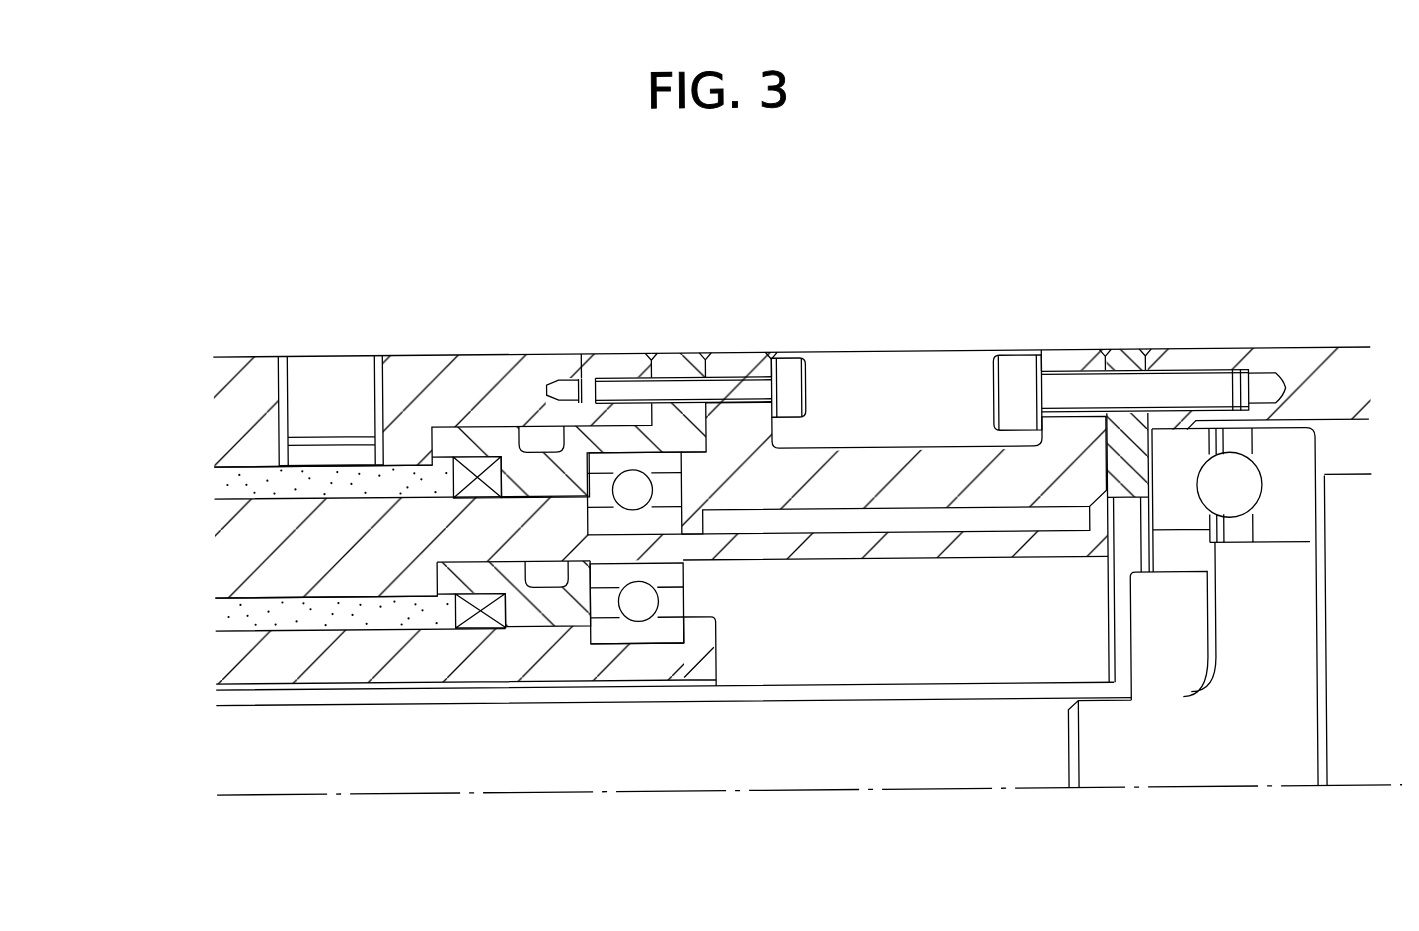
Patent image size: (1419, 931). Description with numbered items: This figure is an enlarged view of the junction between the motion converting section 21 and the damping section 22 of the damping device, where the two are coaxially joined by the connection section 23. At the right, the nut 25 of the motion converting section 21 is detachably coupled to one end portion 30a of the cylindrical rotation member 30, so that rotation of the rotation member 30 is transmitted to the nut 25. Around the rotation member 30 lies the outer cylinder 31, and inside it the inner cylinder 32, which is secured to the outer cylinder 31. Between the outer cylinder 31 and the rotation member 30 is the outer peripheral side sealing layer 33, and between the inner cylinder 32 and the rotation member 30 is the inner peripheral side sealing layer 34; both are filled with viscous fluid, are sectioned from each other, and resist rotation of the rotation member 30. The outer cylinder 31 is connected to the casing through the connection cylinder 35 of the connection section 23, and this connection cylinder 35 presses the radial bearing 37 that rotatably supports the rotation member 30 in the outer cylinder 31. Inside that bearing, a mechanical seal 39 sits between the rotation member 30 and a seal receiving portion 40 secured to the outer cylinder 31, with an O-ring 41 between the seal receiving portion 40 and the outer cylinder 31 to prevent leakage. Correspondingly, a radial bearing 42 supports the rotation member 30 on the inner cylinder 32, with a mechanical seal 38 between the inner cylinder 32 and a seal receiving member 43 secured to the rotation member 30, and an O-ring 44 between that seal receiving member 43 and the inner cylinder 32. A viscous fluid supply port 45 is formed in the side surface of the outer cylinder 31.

The motion converting section 21 is at (1315, 328).
The damping section 22 is at (379, 328).
The connection section 23 is at (878, 351).
The nut 25 is at (1290, 617).
The rotation member 30 is at (232, 543).
The one end portion of the rotation member 30a is at (1113, 578).
The outer cylinder 31 is at (240, 387).
The inner cylinder 32 is at (237, 647).
The outer peripheral side sealing layer 33 is at (225, 477).
The inner peripheral side sealing layer 34 is at (227, 605).
The connection cylinder 35 is at (897, 456).
The radial bearing 37 is at (662, 459).
The mechanical seal 38 is at (480, 617).
The mechanical seal 39 is at (488, 454).
The seal receiving portion 40 is at (603, 438).
The O-ring 41 is at (533, 438).
The radial bearing 42 is at (635, 634).
The seal receiving member 43 is at (533, 613).
The O-ring 44 is at (553, 575).
The viscous fluid supply port 45 is at (375, 393).